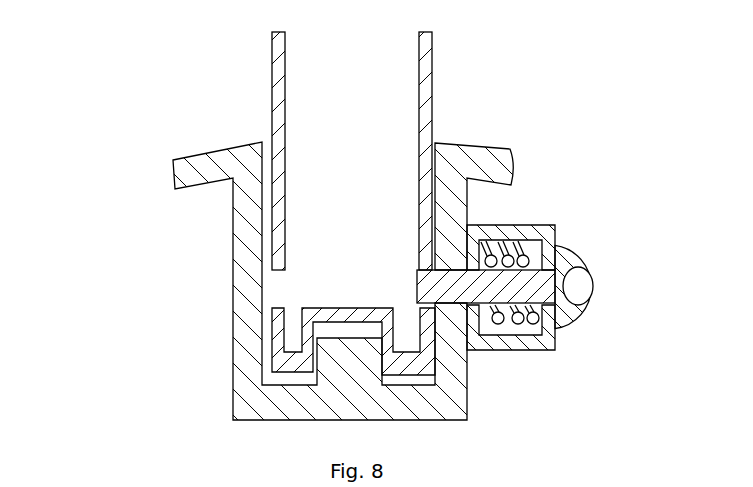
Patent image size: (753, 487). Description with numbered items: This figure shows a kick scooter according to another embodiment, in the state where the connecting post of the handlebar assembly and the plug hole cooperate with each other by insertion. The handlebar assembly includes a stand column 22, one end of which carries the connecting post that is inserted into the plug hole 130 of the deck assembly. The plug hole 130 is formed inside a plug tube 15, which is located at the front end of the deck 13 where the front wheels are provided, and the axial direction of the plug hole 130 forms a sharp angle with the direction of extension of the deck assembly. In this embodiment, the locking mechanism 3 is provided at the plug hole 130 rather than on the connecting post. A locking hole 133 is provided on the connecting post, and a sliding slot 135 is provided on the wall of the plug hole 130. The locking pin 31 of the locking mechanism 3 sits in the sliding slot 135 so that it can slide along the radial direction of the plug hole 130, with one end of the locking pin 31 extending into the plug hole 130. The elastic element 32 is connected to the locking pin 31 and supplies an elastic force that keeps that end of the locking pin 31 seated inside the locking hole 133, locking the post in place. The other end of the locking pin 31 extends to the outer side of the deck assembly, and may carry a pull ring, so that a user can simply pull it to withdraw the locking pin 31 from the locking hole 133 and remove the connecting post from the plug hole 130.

The deck 13 is at (319, 218).
The plug tube 15 is at (240, 347).
The plug hole 130 is at (268, 160).
The stand column 22 is at (420, 67).
The locking hole 133 is at (418, 305).
The sliding slot 135 is at (445, 305).
The locking mechanism 3 is at (559, 291).
The locking pin 31 is at (553, 242).
The elastic element 32 is at (505, 252).